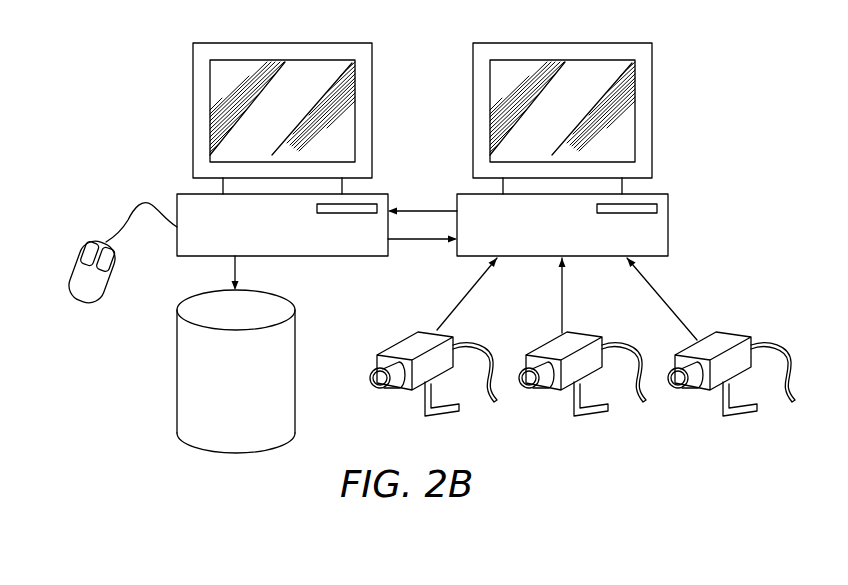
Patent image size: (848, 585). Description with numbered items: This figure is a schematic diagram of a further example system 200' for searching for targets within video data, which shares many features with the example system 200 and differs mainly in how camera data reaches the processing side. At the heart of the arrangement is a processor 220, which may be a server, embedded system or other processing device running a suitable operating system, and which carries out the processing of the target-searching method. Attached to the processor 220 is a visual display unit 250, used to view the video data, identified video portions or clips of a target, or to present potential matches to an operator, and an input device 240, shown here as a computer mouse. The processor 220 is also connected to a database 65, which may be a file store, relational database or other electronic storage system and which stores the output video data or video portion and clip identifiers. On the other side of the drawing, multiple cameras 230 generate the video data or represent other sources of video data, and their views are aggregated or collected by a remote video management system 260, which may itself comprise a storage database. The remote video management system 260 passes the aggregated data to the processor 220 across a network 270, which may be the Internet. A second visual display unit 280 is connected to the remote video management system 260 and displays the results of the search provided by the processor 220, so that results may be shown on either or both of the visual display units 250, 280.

The further example system 200' is at (409, 238).
The example system 200 is at (409, 238).
The visual display unit 250 is at (266, 120).
The processor 220 is at (266, 235).
The visual display unit 280 is at (546, 120).
The remote video management system 260 is at (546, 235).
The network 270 is at (419, 209).
The database 65 is at (224, 393).
The input device 240 is at (72, 296).
The cameras 230 is at (378, 388).